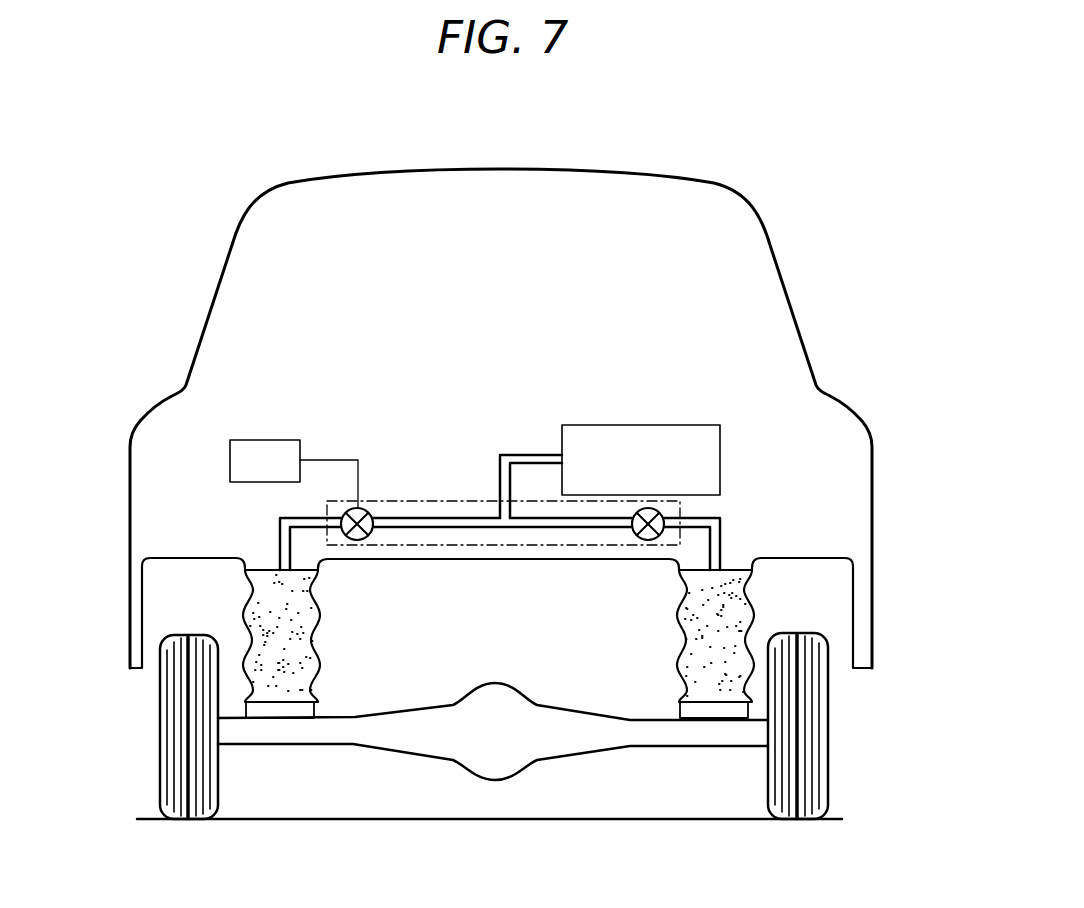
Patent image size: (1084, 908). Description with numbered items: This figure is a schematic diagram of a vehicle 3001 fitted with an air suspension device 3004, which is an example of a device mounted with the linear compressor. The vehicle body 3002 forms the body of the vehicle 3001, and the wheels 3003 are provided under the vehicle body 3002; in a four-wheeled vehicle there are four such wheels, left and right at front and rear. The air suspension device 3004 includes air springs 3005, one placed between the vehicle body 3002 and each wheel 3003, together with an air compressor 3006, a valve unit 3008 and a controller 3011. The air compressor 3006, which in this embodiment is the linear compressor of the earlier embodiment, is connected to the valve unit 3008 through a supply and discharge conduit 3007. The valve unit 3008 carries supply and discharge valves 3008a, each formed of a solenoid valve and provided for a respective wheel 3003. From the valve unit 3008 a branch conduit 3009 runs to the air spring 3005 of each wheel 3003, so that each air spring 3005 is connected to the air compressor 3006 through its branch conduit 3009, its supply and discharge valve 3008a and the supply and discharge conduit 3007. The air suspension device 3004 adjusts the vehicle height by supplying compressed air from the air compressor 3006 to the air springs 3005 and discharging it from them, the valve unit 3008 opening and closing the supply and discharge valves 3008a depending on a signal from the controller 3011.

The vehicle 3001 is at (818, 197).
The vehicle body 3002 is at (857, 414).
The wheel 3003 is at (160, 723).
The air suspension device 3004 is at (745, 495).
The air spring 3005 is at (243, 612).
The air compressor 3006 is at (644, 425).
The supply and discharge conduit 3007 is at (530, 455).
The valve unit 3008 is at (426, 500).
The supply and discharge valve 3008a is at (357, 541).
The branch conduit 3009 is at (281, 536).
The controller 3011 is at (268, 440).